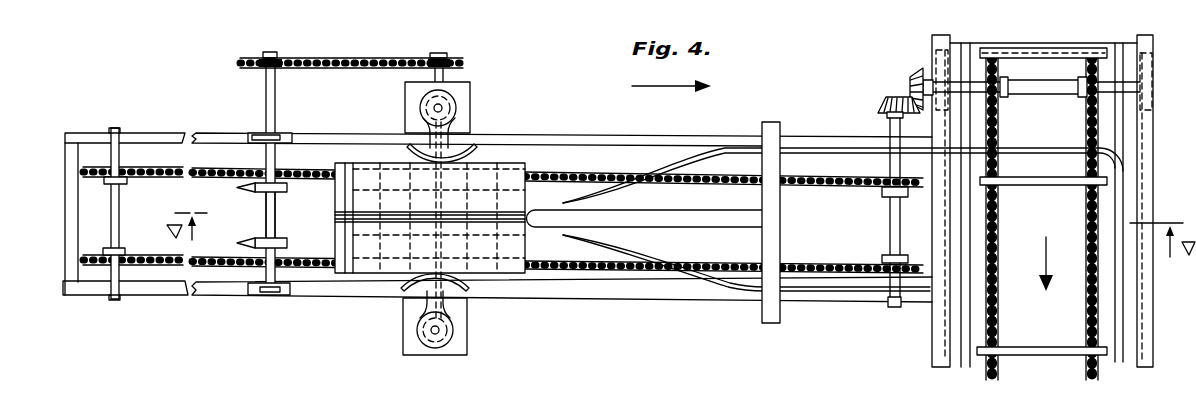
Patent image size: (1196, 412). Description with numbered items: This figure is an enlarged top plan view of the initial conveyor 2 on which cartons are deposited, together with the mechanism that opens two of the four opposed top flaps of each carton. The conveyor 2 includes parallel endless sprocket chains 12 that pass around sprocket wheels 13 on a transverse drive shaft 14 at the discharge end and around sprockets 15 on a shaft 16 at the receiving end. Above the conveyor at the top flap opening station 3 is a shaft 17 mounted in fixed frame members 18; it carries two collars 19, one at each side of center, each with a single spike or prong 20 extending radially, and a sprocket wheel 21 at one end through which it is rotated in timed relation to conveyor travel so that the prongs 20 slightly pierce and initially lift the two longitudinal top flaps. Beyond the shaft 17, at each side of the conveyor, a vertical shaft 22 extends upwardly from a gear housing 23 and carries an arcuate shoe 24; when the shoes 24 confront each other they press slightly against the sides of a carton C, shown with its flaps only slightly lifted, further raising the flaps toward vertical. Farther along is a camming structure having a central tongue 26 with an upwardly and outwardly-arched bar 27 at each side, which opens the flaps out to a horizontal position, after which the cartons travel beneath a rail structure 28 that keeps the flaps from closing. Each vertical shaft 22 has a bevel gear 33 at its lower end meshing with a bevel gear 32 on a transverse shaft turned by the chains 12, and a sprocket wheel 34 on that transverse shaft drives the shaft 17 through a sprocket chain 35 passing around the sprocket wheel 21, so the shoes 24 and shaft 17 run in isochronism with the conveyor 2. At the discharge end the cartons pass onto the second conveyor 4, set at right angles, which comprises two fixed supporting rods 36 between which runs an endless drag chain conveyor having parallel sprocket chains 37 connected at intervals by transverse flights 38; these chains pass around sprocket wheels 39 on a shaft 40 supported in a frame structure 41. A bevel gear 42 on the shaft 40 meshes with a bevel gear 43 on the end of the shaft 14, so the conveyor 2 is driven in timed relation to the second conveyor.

The initial conveyor 2 is at (209, 325).
The top flap opening station 3 is at (520, 103).
The second conveyor 4 is at (921, 337).
The sprocket chains 12 is at (798, 184).
The sprocket wheels 13 is at (883, 192).
The transverse drive shaft 14 is at (890, 217).
The sprockets 15 is at (127, 182).
The shaft 16 is at (117, 222).
The shaft 17 is at (267, 110).
The fixed frame members 18 is at (294, 133).
The collars 19 is at (281, 237).
The spike or prong 20 is at (237, 188).
The sprocket wheel 21 is at (279, 53).
The vertical shaft 22 is at (434, 103).
The gear housing 23 is at (473, 92).
The arcuate shoe 24 is at (475, 146).
The central tongue 26 is at (640, 212).
The upwardly and outwardly-arched bar 27 is at (654, 165).
The rail structure 28 is at (780, 123).
The bevel gear 32 is at (417, 127).
The bevel gear 33 is at (417, 108).
The sprocket wheel 34 is at (453, 57).
The sprocket chain 35 is at (353, 58).
The fixed supporting rods or bars 36 is at (965, 367).
The sprocket chains 37 is at (1085, 317).
The transverse flights 38 is at (1028, 186).
The sprocket wheels 39 is at (1080, 98).
The shaft 40 is at (1053, 78).
The frame structure 41 is at (943, 62).
The bevel gear 42 is at (911, 78).
The bevel gear 43 is at (884, 100).
The carton C is at (526, 163).